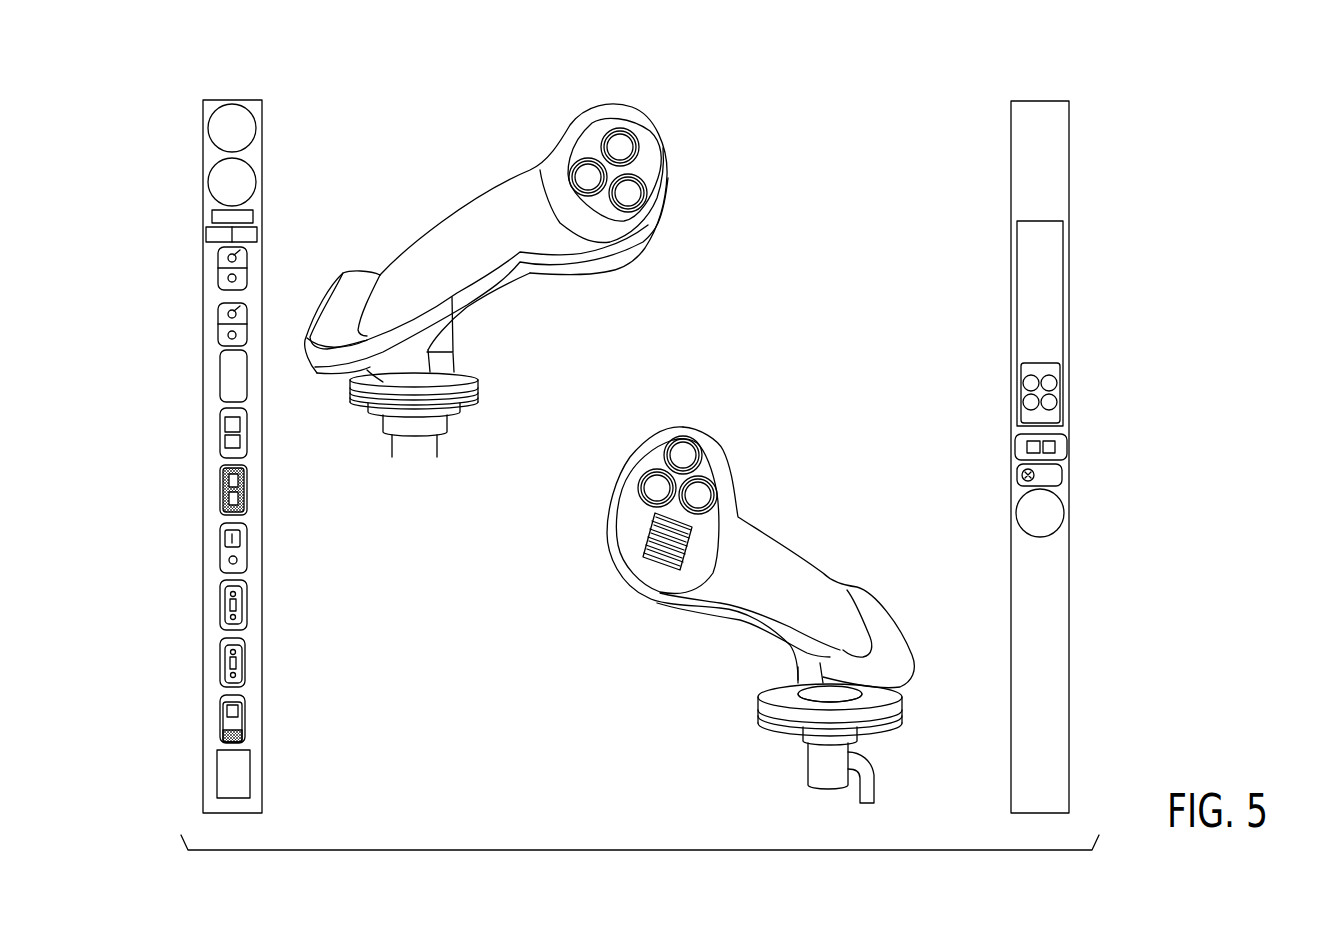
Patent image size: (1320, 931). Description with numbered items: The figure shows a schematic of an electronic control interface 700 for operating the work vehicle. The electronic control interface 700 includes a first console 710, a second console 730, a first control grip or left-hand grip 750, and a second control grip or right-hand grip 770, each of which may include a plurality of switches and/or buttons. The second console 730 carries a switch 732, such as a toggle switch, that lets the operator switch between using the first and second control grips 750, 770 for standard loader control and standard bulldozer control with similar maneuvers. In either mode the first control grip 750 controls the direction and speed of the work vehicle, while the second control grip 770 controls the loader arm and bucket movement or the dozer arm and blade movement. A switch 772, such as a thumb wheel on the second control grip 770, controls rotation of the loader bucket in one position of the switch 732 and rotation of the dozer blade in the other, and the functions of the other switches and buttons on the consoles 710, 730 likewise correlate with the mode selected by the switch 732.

The electronic control interface 700 is at (352, 131).
The first console 710 is at (207, 86).
The second console 730 is at (1050, 90).
The switch 732 is at (1012, 447).
The first control grip 750 is at (677, 121).
The second control grip 770 is at (753, 420).
The switch 772 is at (645, 558).